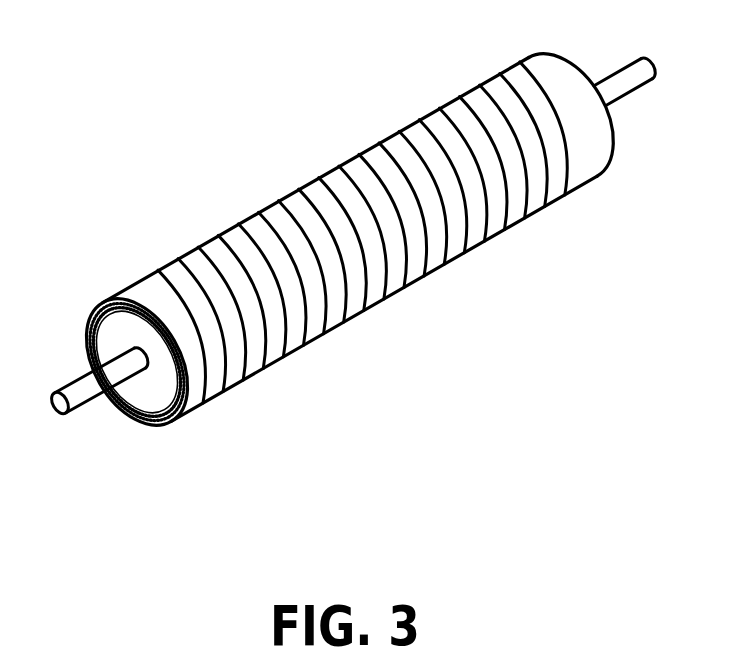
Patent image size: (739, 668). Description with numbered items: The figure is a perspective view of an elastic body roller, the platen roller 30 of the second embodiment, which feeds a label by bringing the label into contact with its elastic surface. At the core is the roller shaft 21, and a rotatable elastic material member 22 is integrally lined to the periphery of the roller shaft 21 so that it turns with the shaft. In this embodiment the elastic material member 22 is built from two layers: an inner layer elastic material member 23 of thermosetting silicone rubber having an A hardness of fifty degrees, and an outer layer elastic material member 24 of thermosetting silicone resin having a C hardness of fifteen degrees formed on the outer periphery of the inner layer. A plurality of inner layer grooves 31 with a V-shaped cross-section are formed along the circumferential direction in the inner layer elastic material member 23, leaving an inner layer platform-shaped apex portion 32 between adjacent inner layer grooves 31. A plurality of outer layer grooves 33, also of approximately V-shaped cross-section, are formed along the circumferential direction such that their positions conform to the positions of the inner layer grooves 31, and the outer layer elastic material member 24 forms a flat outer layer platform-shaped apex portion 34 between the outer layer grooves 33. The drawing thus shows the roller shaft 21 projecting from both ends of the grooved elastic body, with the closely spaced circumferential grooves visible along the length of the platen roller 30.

The platen roller 30 is at (290, 112).
The roller shaft 21 is at (93, 398).
The elastic material member 22 is at (340, 299).
The inner layer elastic material member 23 is at (200, 488).
The outer layer elastic material member 24 is at (173, 420).
The outer layer grooves 33 is at (404, 274).
The inner layer grooves 31 is at (412, 283).
The outer layer platform-shaped apex portion 34 is at (512, 203).
The inner layer platform-shaped apex portion 32 is at (505, 200).